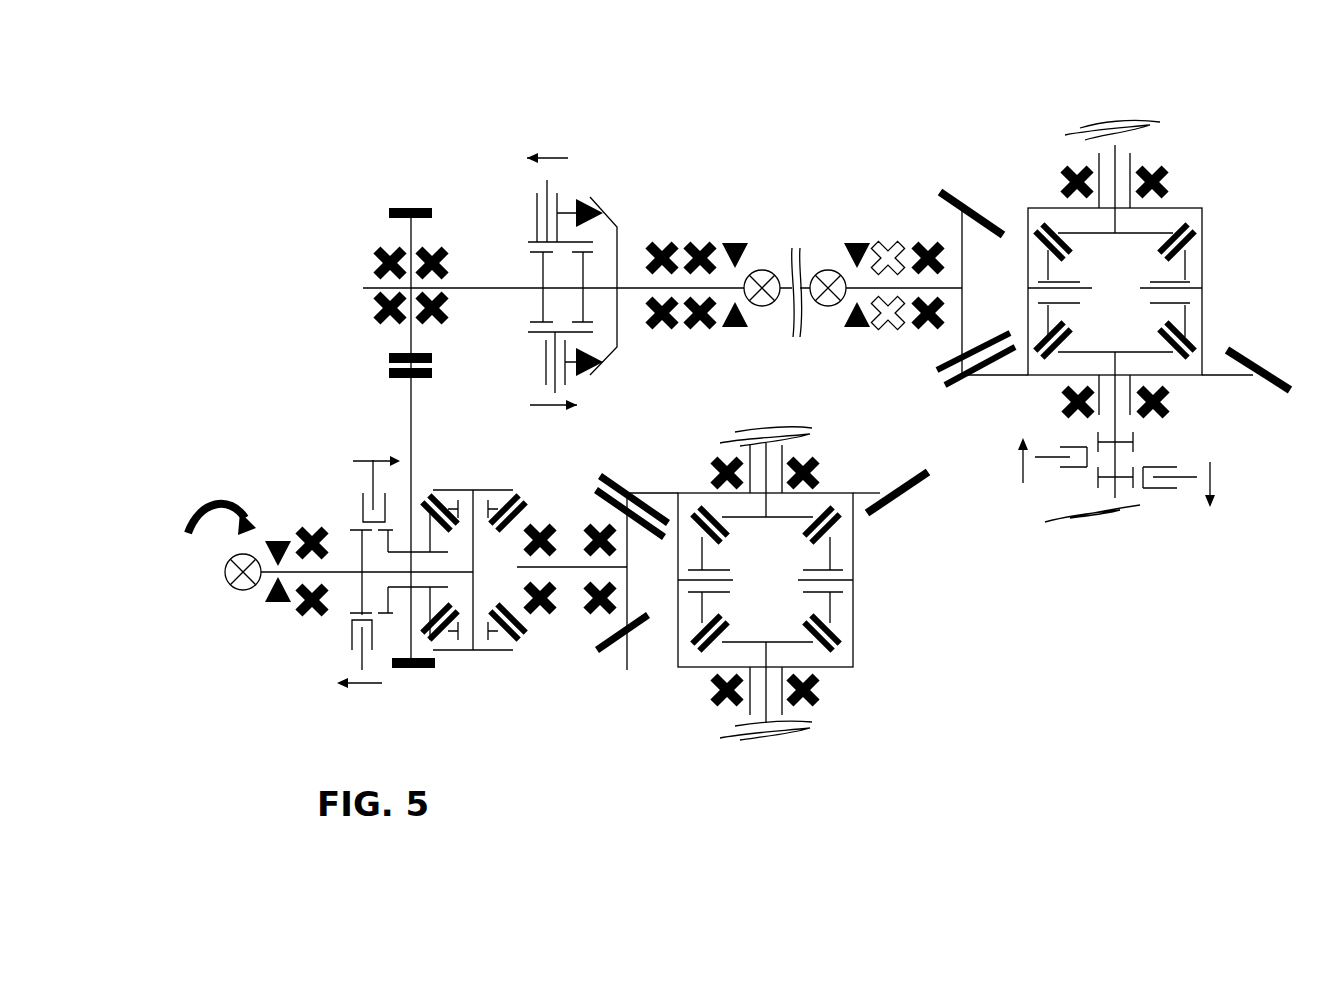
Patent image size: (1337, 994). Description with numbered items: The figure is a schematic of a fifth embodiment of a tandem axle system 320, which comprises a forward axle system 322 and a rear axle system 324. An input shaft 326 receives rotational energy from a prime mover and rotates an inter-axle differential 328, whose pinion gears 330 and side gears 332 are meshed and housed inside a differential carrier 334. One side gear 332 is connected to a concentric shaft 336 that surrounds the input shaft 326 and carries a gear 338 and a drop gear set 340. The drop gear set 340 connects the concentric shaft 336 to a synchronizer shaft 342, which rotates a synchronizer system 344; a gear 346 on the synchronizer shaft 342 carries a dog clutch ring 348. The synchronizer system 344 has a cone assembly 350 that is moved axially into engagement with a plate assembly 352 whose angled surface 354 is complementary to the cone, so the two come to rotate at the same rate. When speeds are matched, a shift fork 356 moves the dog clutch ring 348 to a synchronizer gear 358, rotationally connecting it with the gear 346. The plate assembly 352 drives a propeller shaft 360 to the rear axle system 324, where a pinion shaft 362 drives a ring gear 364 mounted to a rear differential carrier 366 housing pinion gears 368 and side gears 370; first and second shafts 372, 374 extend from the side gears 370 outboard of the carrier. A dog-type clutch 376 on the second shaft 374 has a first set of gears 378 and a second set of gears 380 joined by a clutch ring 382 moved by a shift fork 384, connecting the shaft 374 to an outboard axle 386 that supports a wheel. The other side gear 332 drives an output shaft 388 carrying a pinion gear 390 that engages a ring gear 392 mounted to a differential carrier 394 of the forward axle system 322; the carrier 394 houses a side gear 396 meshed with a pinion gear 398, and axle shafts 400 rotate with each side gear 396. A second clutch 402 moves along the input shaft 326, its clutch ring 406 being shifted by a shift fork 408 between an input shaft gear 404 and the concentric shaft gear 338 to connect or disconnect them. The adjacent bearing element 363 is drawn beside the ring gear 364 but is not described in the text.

The tandem axle system 320 is at (1010, 570).
The forward axle system 322 is at (819, 583).
The rear axle system 324 is at (1159, 280).
The input shaft 326 is at (347, 570).
The inter-axle differential 328 is at (481, 587).
The pinion gears 330 is at (507, 497).
The side gears 332 is at (527, 628).
The differential carrier 334 is at (508, 652).
The concentric shaft 336 is at (407, 600).
The gear 338 is at (395, 527).
The drop gear set 340 is at (392, 395).
The synchronizer shaft 342 is at (488, 290).
The synchronizer system 344 is at (577, 239).
The gear 346 is at (543, 262).
The dog clutch ring 348 is at (528, 242).
The cone assembly 350 is at (588, 182).
The plate assembly 352 is at (618, 200).
The angled surface 354 is at (612, 215).
The shift fork 356 is at (551, 385).
The synchronizer gear 358 is at (593, 325).
The propeller shaft 360 is at (808, 272).
The pinion shaft 362 is at (960, 282).
The bearing 363 is at (945, 362).
The ring gear 364 is at (968, 385).
The rear differential carrier 366 is at (1202, 318).
The pinion gears 368 is at (1185, 250).
The side gears 370 is at (1190, 228).
The first shaft 372 is at (1117, 150).
The second shaft 374 is at (1117, 423).
The clutch 376 is at (1107, 509).
The first set of gears 378 is at (1133, 445).
The second set of gears 380 is at (1098, 480).
The clutch ring 382 is at (1150, 503).
The shift fork 384 is at (1183, 482).
The outboard axle 386 is at (1045, 518).
The output shaft 388 is at (567, 565).
The pinion gear 390 is at (614, 648).
The ring gear 392 is at (920, 490).
The differential carrier 394 is at (853, 593).
The side gear 396 is at (838, 645).
The pinion gear 398 is at (837, 643).
The axle shafts 400 is at (765, 453).
The clutch 402 is at (348, 708).
The input shaft gear 404 is at (355, 530).
The clutch ring 406 is at (350, 632).
The shift fork 408 is at (373, 470).